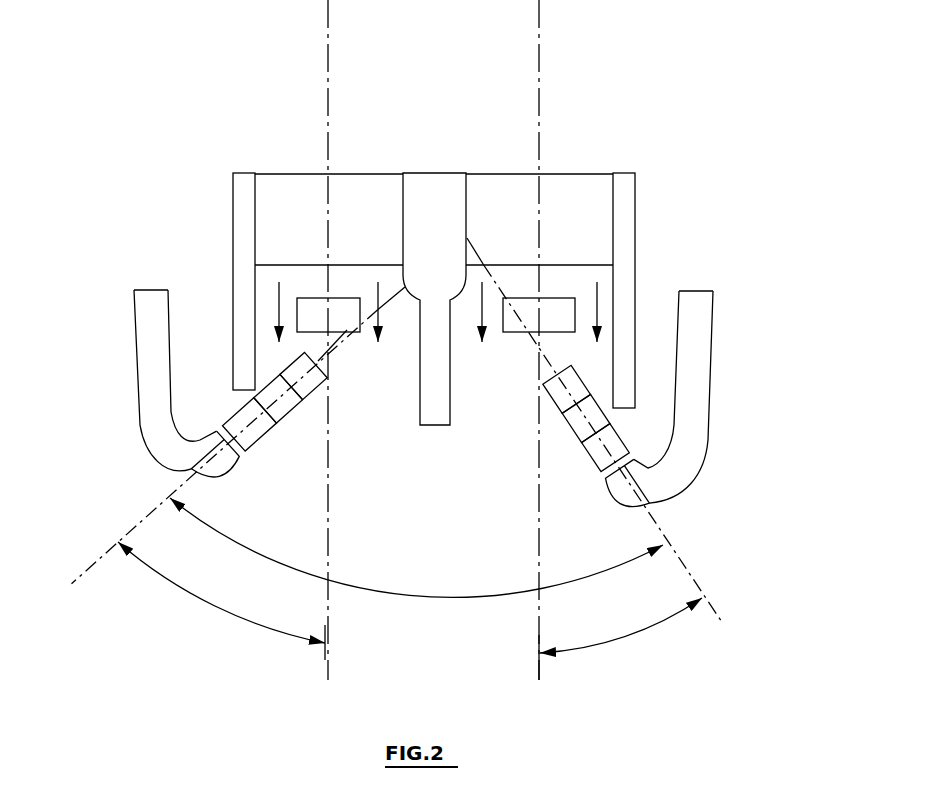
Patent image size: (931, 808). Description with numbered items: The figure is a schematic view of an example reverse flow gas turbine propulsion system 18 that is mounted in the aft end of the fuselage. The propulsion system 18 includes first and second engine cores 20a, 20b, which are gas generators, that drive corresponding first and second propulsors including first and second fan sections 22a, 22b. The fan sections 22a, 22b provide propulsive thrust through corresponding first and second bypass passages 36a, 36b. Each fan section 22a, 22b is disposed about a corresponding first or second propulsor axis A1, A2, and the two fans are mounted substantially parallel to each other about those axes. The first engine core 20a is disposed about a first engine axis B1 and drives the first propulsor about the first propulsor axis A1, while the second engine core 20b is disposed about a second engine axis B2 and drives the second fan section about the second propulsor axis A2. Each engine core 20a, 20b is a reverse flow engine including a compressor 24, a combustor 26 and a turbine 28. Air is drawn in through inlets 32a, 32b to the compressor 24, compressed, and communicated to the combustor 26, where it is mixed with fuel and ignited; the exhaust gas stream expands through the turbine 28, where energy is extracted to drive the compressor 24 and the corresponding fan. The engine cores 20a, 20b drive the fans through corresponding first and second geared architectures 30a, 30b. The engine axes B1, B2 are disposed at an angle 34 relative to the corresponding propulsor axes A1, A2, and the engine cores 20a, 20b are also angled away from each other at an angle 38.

The propulsion system 18 is at (688, 98).
The first engine core 20a is at (420, 432).
The second engine core 20b is at (493, 417).
The first fan section 22a is at (285, 187).
The second fan section 22b is at (585, 187).
The compressor 24 is at (257, 447).
The combustor 26 is at (280, 413).
The turbine 28 is at (317, 387).
The first geared architecture 30a is at (348, 331).
The second geared architecture 30b is at (517, 336).
The first inlet 32a is at (150, 287).
The second inlet 32b is at (698, 287).
The angle 34 is at (217, 607).
The first bypass passage 36a is at (268, 305).
The second bypass passage 36b is at (566, 280).
The angle 38 is at (430, 597).
The first propulsor axis A1 is at (328, 58).
The second propulsor axis A2 is at (539, 58).
The first engine axis B1 is at (110, 548).
The second engine axis B2 is at (688, 572).